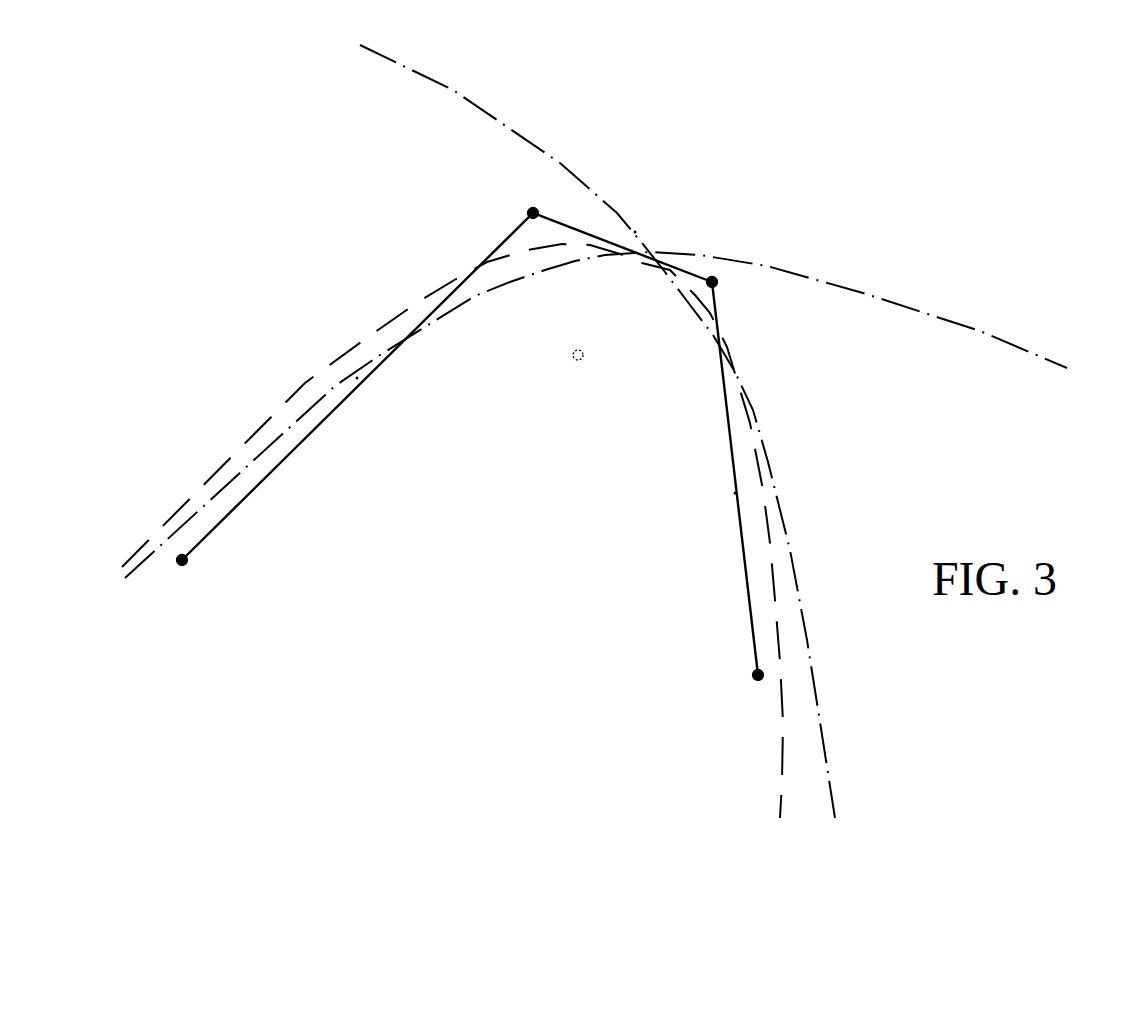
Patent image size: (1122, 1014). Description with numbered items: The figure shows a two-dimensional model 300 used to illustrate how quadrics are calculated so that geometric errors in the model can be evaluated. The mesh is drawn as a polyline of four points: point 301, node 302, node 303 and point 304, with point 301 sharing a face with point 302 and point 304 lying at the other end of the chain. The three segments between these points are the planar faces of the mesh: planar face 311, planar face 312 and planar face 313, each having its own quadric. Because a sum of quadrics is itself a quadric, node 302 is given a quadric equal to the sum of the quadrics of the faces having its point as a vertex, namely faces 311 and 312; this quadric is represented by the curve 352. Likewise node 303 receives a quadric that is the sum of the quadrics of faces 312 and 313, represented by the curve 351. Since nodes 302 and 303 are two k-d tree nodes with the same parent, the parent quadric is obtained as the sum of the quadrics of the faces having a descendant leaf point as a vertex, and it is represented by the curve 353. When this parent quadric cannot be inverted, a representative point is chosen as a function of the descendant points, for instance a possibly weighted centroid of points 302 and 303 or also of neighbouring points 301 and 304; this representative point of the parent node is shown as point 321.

The curve approximation diagram 300 is at (243, 165).
The point 301 is at (186, 563).
The node 302 is at (531, 210).
The node 303 is at (714, 280).
The point 304 is at (756, 673).
The planar face 311 is at (351, 365).
The planar face 312 is at (643, 221).
The planar face 313 is at (747, 487).
The representative point 321 is at (575, 362).
The curve 351 is at (462, 87).
The curve 352 is at (975, 320).
The curve 353 is at (456, 279).